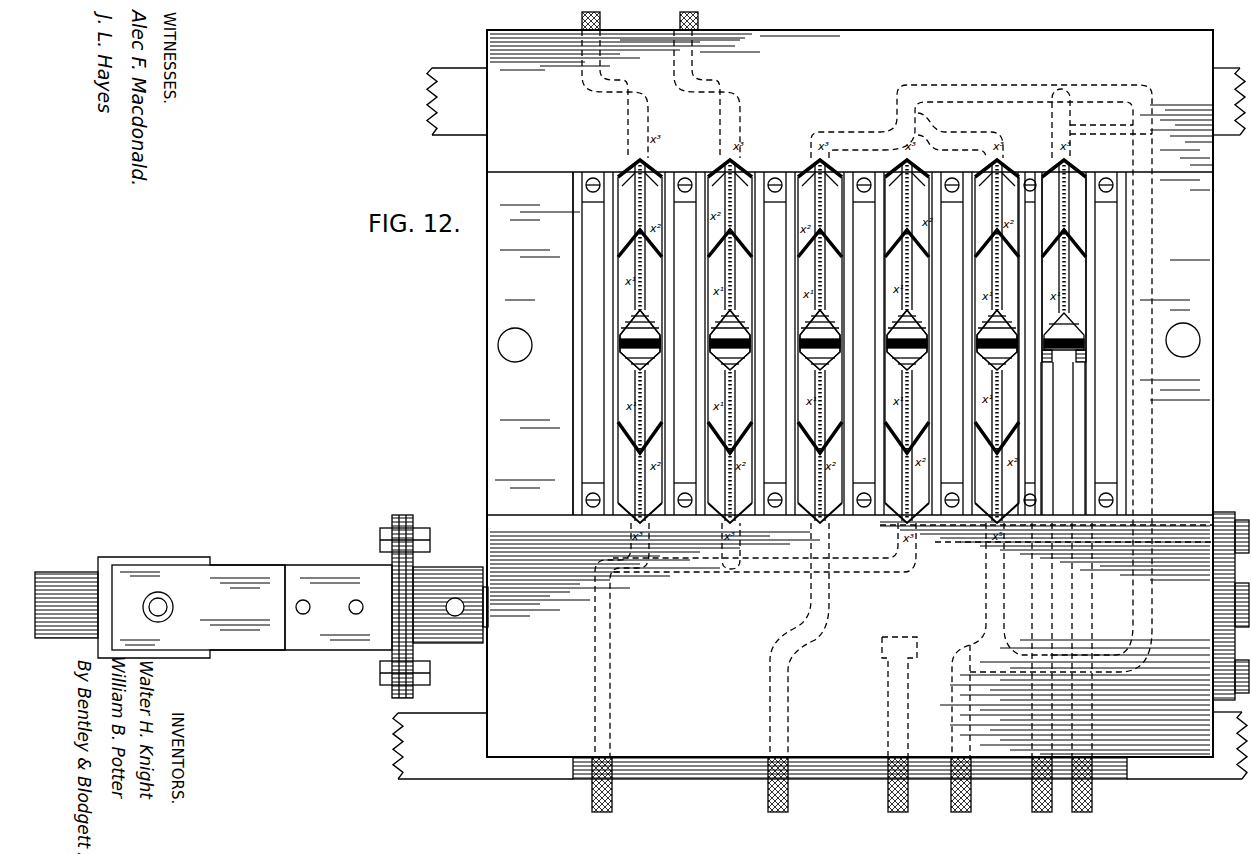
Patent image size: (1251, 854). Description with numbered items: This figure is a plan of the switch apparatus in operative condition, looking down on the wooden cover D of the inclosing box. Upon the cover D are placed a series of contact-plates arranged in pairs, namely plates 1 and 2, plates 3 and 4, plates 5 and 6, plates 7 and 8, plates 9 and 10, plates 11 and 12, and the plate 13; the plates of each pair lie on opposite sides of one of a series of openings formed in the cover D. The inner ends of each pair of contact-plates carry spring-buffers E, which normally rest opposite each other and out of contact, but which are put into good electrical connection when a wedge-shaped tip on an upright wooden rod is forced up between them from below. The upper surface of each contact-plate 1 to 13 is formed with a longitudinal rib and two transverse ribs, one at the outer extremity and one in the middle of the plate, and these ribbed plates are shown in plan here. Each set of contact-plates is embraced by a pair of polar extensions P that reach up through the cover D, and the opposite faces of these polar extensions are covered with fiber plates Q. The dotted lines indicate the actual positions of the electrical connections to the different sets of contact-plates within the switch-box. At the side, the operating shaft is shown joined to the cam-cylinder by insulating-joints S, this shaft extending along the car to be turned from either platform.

The contact-plate 1 is at (630, 166).
The contact-plate 2 is at (622, 638).
The contact-plate 3 is at (733, 168).
The contact-plate 4 is at (738, 520).
The contact-plate 5 is at (820, 341).
The contact-plate 6 is at (803, 617).
The contact-plate 7 is at (907, 341).
The contact-plate 8 is at (766, 617).
The contact-plate 9 is at (997, 341).
The contact-plate 10 is at (1021, 612).
The contact-plate 11 is at (1096, 302).
The contact-plate 12 is at (1044, 410).
The contact-plate 13 is at (1080, 444).
The spring-buffers E is at (903, 372).
The valve casing partition P is at (600, 370).
The fiber plates Q is at (575, 288).
The wooden cover D is at (1150, 302).
The insulating-joints S is at (261, 606).